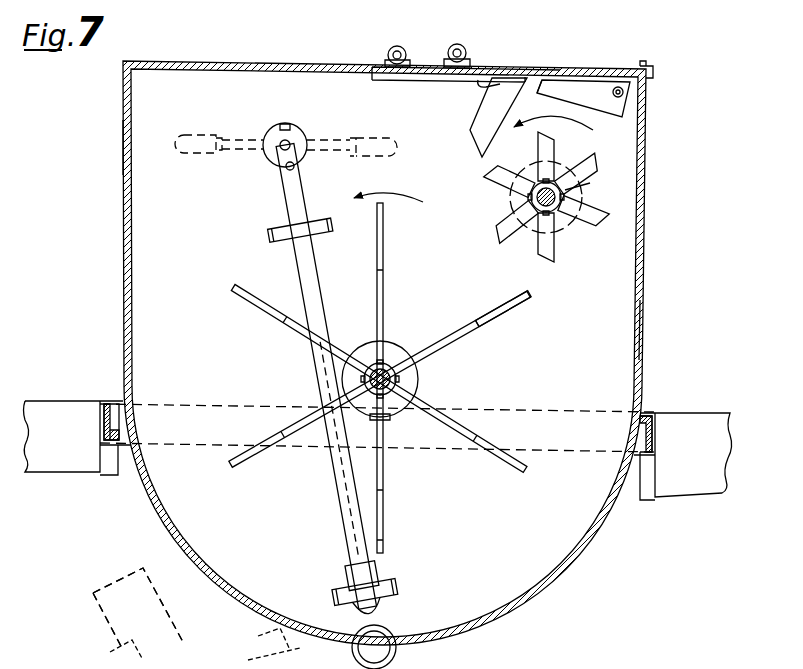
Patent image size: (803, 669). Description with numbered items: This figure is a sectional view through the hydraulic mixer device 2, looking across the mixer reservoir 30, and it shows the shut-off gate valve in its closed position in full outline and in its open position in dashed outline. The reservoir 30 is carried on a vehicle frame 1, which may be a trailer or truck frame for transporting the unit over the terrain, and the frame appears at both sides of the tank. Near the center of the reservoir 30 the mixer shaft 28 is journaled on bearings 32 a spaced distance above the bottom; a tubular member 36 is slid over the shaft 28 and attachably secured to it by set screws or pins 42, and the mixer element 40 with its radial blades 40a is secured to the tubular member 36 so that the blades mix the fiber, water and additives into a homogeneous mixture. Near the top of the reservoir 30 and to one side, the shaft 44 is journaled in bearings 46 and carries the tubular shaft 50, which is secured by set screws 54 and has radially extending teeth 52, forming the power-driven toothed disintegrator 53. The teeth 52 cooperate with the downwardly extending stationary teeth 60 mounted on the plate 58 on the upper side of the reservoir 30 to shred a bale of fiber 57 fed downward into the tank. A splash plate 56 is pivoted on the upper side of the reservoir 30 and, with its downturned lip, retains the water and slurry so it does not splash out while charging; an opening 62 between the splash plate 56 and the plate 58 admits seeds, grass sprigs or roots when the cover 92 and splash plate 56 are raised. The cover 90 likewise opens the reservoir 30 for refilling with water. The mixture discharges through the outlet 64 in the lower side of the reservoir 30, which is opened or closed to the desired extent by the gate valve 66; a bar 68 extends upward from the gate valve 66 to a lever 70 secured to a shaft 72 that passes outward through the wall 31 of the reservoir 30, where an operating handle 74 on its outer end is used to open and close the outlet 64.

The vehicle frame 1 is at (654, 408).
The hydraulic mixer device 2 is at (652, 170).
The mixer shaft 28 is at (397, 375).
The mixer reservoir 30 is at (637, 360).
The wall 31 is at (138, 160).
The bearings 32 is at (390, 420).
The tubular member 36 is at (382, 352).
The mixer element 40 is at (470, 418).
The radial blades 40a is at (487, 328).
The set screws 42 is at (398, 383).
The shaft 44 is at (568, 177).
The bearings 46 is at (572, 198).
The tubular shaft 50 is at (558, 213).
The teeth 52 is at (598, 222).
The toothed disintegrator 53 is at (602, 210).
The set screws 54 is at (528, 196).
The splash plate 56 is at (594, 80).
The bale of fiber 57 is at (108, 593).
The plate 58 is at (495, 72).
The stationary teeth 60 is at (470, 130).
The opening 62 is at (537, 93).
The outlet 64 is at (396, 648).
The gate valve 66 is at (390, 612).
The bar 68 is at (300, 197).
The lever 70 is at (300, 128).
The shaft 72 is at (278, 132).
The operating handle 74 is at (183, 155).
The cover 90 is at (222, 62).
The cover 92 is at (653, 66).